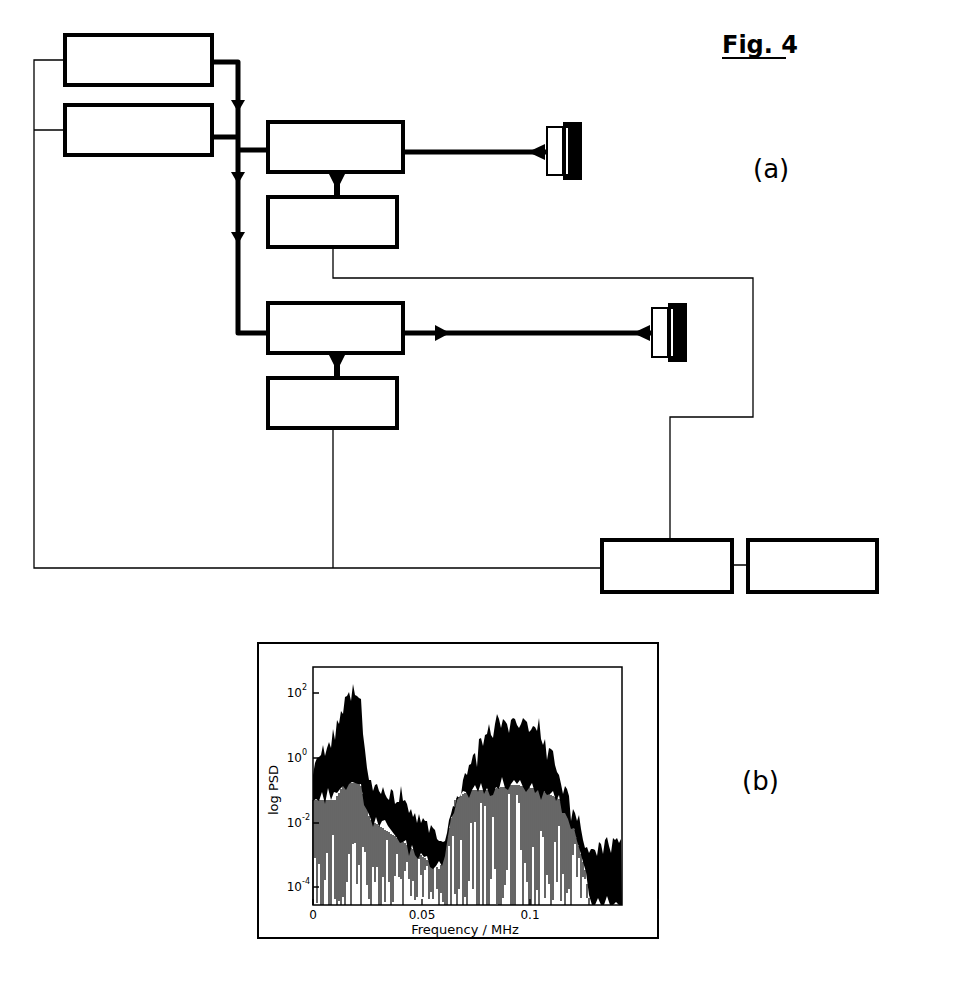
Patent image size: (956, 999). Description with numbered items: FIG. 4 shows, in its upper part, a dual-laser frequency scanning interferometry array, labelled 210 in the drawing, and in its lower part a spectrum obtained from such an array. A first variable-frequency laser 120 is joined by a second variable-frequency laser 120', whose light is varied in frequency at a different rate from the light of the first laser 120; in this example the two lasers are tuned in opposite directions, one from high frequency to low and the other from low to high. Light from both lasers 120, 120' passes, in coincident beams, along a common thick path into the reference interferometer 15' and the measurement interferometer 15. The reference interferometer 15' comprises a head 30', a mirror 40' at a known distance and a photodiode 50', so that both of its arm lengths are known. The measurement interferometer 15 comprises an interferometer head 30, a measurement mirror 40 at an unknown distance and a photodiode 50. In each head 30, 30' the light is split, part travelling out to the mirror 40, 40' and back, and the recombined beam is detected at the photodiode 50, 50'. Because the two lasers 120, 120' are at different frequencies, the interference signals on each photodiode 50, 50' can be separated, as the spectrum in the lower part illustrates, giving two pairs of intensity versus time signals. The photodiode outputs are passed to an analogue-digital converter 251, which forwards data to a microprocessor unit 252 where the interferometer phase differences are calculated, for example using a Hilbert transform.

The second variable-frequency laser 120' is at (138, 60).
The variable-frequency laser 120 is at (138, 130).
The head 30' is at (335, 147).
The interferometer head 30 is at (335, 328).
The photodiode 50' is at (332, 222).
The photodiode 50 is at (332, 403).
The mirror 40' is at (521, 151).
The measurement mirror 40 is at (568, 332).
The reference interferometer 15' is at (453, 125).
The measurement interferometer 15 is at (465, 414).
The measuring device 210 is at (215, 408).
The analogue-digital converter 251 is at (667, 566).
The microprocessor unit 252 is at (812, 566).